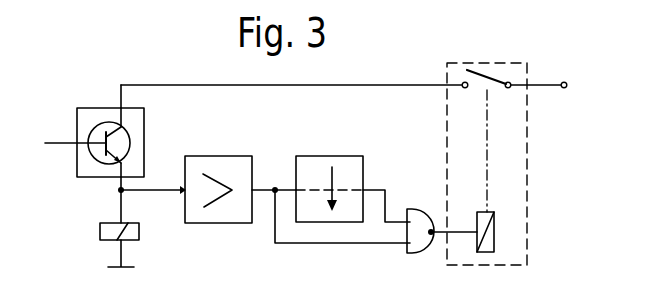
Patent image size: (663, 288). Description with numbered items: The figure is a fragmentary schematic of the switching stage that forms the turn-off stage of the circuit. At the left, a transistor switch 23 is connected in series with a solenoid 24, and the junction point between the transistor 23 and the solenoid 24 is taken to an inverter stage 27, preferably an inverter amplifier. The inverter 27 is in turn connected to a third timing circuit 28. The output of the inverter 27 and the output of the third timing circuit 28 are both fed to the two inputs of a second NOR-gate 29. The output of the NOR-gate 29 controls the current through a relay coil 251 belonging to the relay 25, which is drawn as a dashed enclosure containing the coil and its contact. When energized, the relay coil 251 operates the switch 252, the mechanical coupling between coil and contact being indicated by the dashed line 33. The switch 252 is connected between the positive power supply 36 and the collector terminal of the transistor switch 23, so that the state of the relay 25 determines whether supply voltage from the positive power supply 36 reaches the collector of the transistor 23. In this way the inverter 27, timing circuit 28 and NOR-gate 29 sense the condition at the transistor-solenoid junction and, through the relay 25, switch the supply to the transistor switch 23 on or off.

The transistor switch 23 is at (103, 110).
The solenoid 24 is at (100, 232).
The relay 25 is at (528, 222).
The inverter stage 27 is at (213, 156).
The third timing circuit 28 is at (325, 156).
The second NOR-gate 29 is at (422, 210).
The dashed line 33 is at (486, 149).
The positive power supply 36 is at (567, 81).
The relay coil 251 is at (495, 215).
The switch 252 is at (502, 88).